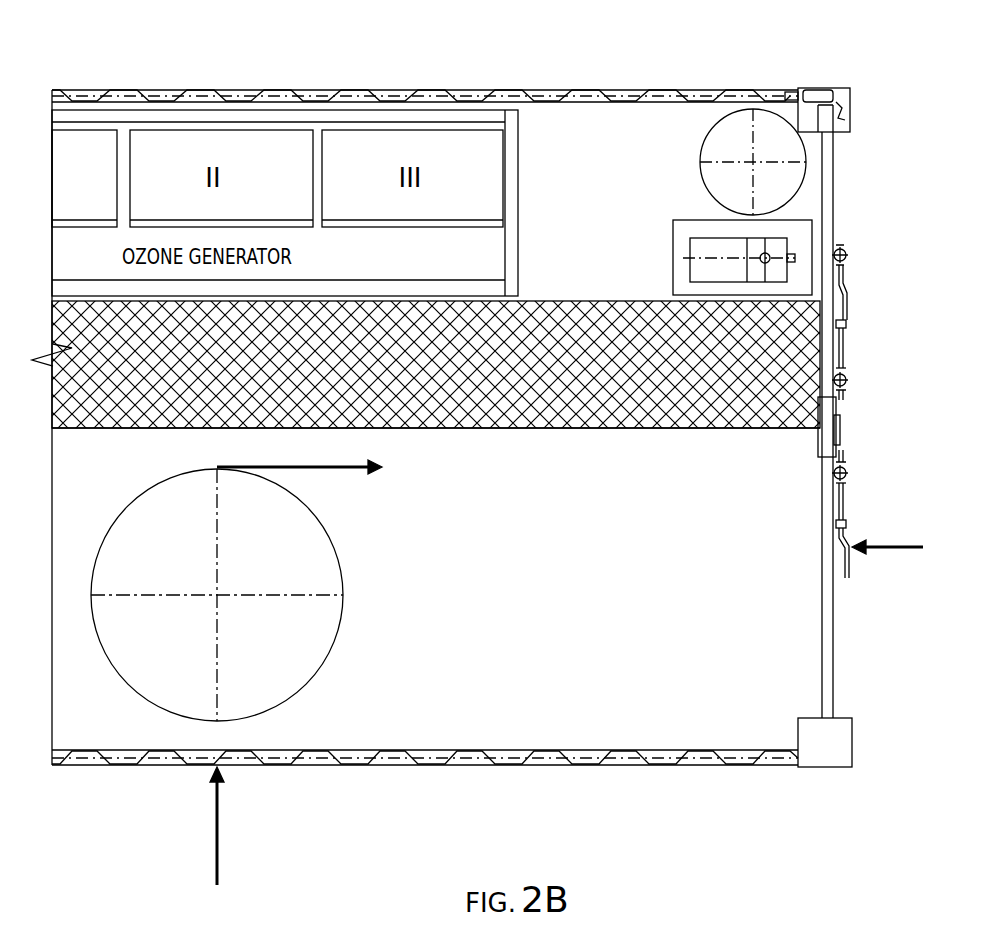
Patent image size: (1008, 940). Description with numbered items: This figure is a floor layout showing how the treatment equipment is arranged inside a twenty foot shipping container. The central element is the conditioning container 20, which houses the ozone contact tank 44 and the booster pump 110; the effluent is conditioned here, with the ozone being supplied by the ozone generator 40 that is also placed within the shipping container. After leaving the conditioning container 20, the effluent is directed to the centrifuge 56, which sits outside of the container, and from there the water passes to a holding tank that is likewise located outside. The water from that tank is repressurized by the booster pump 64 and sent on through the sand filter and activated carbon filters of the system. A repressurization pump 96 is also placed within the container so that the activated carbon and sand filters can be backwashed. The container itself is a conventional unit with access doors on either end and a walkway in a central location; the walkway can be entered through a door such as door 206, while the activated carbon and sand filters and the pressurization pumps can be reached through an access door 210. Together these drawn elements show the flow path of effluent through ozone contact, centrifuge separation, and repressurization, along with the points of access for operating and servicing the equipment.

The ozone generator 40 is at (58, 90).
The ozone contact tank 44 is at (729, 135).
The booster pump 110 is at (768, 257).
The door 206 is at (852, 244).
The access door 210 is at (845, 498).
The booster pump 64 is at (688, 498).
The repressurization pump 96 is at (780, 678).
The conditioning container 20 is at (306, 683).
The centrifuge 56 is at (560, 483).